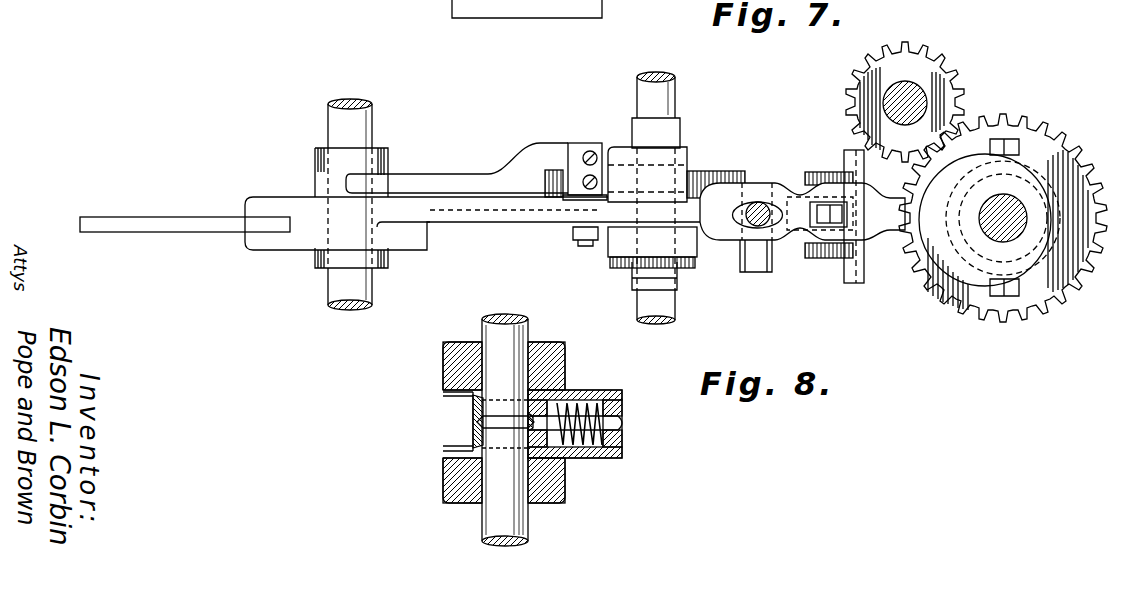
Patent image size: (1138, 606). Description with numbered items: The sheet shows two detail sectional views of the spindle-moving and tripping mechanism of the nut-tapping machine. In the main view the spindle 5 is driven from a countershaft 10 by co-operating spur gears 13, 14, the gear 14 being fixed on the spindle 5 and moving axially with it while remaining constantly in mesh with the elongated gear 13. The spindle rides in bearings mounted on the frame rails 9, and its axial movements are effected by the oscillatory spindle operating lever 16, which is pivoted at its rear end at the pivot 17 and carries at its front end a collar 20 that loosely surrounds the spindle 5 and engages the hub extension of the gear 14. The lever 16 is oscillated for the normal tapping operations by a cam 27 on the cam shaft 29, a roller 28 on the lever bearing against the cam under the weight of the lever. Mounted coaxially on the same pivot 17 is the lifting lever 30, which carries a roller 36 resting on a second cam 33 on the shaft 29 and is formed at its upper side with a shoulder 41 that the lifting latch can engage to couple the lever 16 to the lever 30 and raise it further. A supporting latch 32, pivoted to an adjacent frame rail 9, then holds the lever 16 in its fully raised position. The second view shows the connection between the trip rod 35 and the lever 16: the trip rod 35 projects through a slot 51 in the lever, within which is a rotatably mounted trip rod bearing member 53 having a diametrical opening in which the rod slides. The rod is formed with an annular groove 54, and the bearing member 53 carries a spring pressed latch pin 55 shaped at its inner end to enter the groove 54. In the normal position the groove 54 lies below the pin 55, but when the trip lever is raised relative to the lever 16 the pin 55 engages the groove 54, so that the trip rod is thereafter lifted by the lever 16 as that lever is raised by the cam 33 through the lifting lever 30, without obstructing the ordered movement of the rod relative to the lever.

In FIG. 7, the spindle 5 is at (1025, 233).
In FIG. 7, the frame rails 9 is at (857, 283).
In FIG. 7, the countershaft 10 is at (925, 100).
In FIG. 7, the spur gear 13 is at (947, 76).
In FIG. 7, the spur gear 14 is at (1062, 140).
In FIG. 7, the spindle operating lever 16 is at (472, 225).
In FIG. 8, the spindle operating lever 16 is at (446, 365).
In FIG. 7, the pivot 17 is at (373, 116).
In FIG. 7, the collar 20 is at (997, 300).
In FIG. 7, the cam 27 is at (615, 268).
In FIG. 7, the roller 28 is at (585, 247).
In FIG. 7, the cam shaft 29 is at (676, 102).
In FIG. 7, the lifting lever 30 is at (440, 178).
In FIG. 7, the supporting latch 32 is at (835, 226).
In FIG. 7, the cam 33 is at (727, 171).
In FIG. 7, the trip rod 35 is at (764, 204).
In FIG. 8, the trip rod 35 is at (530, 336).
In FIG. 7, the roller 36 is at (690, 170).
In FIG. 7, the shoulder 41 is at (588, 143).
In FIG. 7, the slot 51 is at (738, 224).
In FIG. 8, the slot 51 is at (480, 345).
In FIG. 7, the trip rod bearing member 53 is at (766, 273).
In FIG. 8, the trip rod bearing member 53 is at (452, 427).
In FIG. 8, the annular groove 54 is at (476, 416).
In FIG. 8, the latch pin 55 is at (560, 394).